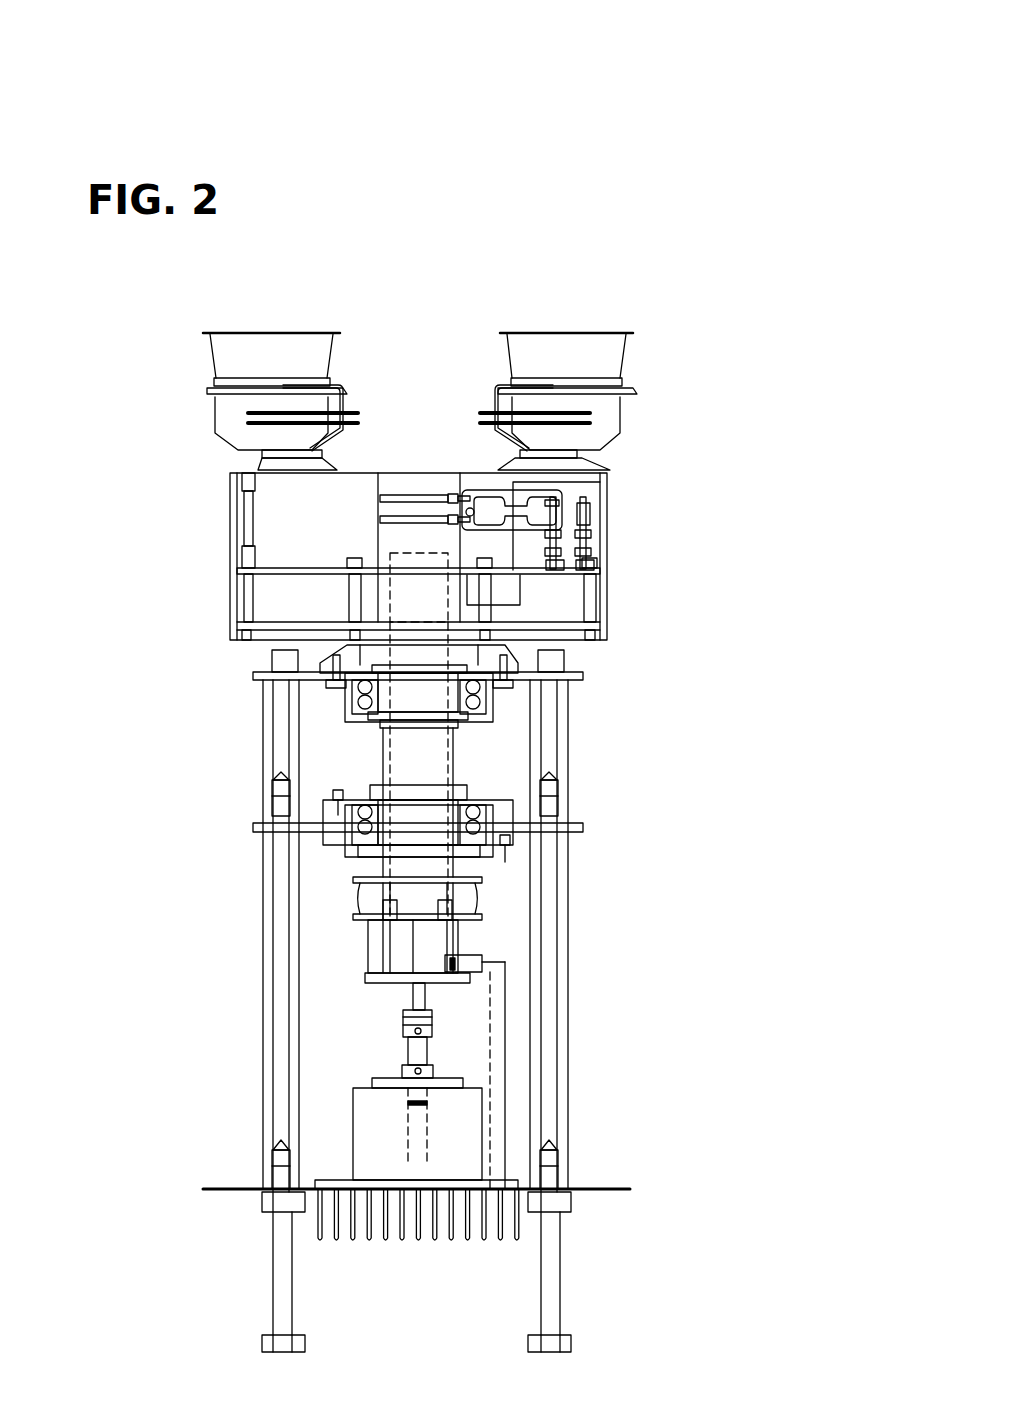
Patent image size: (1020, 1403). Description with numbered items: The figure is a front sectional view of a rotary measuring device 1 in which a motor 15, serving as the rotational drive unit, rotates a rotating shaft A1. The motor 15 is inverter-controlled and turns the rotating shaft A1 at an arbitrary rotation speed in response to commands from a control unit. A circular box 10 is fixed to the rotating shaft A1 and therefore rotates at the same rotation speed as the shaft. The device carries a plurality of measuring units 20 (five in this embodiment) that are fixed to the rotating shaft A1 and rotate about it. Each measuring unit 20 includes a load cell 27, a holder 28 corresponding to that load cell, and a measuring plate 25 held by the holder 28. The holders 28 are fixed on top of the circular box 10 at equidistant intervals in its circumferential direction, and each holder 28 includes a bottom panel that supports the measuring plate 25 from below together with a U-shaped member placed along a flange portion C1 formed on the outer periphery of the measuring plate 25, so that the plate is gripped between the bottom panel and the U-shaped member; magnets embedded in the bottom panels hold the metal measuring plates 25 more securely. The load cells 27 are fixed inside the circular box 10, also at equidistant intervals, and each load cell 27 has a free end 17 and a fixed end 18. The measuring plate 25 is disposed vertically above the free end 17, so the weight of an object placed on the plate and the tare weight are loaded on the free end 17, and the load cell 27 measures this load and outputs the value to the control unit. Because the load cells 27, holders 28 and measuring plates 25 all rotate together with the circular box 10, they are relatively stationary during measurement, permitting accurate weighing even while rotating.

The rotary measuring device 1 is at (567, 106).
The circular box 10 is at (676, 604).
The motor 15 is at (460, 1113).
The free end 17 is at (584, 490).
The fixed end 18 is at (455, 490).
The measuring unit 20 is at (707, 220).
The measuring plate 25 is at (604, 316).
The load cell 27 is at (550, 512).
The holder 28 is at (466, 369).
The rotating shaft A1 is at (443, 750).
The flange portion C1 is at (207, 388).